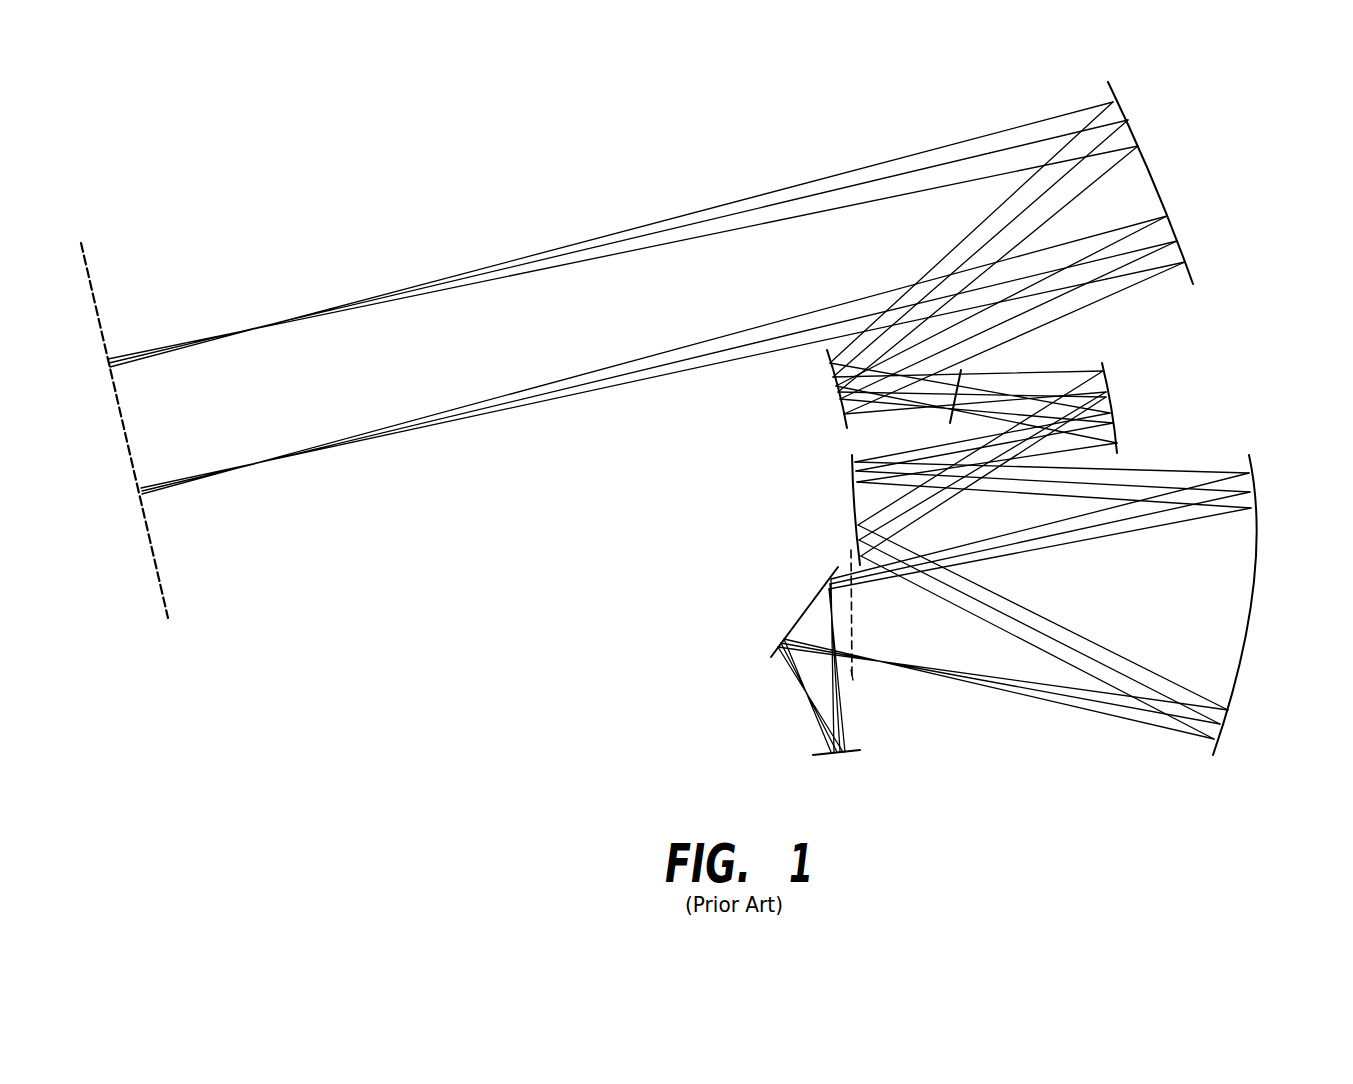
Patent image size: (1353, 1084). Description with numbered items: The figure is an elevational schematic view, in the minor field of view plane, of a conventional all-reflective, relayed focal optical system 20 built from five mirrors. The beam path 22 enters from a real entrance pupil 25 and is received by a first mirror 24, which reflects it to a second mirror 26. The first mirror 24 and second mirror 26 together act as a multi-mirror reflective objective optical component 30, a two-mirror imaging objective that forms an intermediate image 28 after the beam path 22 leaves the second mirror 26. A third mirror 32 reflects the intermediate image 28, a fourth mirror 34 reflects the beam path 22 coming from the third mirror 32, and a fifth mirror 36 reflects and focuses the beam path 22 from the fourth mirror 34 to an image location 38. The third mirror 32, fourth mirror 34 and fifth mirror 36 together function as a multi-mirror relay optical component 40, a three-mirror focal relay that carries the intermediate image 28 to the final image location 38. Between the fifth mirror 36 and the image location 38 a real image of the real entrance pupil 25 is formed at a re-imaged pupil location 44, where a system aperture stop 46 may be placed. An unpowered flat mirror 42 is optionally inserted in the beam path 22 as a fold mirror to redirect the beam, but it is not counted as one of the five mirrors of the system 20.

The all-reflective, relayed focal optical system 20 is at (397, 224).
The beam path 22 is at (673, 212).
The first mirror 24 is at (1153, 170).
The real entrance pupil 25 is at (89, 271).
The second mirror 26 is at (840, 402).
The intermediate image 28 is at (950, 425).
The multi-mirror reflective objective optical component 30 is at (1215, 308).
The third mirror 32 is at (1113, 413).
The fourth mirror 34 is at (853, 512).
The fifth mirror 36 is at (1248, 613).
The image location 38 is at (850, 756).
The multi-mirror relay optical component 40 is at (1198, 443).
The unpowered flat mirror 42 is at (803, 612).
The re-imaged pupil location 44 is at (853, 630).
The system aperture stop 46 is at (853, 674).